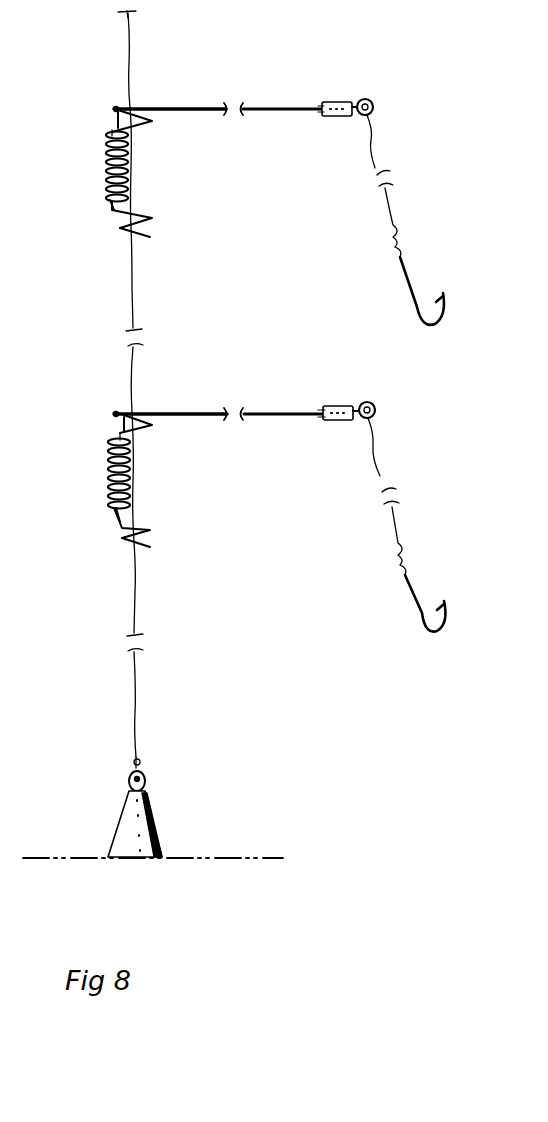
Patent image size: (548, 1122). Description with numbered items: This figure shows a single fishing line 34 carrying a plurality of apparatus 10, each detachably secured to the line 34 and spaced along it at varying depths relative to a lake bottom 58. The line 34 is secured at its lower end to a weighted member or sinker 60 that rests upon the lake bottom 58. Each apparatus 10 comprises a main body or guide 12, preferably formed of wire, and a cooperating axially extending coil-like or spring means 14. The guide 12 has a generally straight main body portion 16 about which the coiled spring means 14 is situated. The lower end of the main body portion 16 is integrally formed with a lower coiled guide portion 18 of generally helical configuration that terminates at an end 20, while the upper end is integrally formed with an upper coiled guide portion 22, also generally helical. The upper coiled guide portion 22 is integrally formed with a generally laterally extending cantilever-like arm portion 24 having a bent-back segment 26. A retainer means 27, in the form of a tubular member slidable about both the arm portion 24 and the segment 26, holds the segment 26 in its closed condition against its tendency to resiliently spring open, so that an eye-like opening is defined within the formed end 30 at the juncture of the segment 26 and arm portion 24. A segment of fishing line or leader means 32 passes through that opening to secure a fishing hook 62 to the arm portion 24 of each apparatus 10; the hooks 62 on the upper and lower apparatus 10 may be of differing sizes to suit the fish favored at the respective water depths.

The apparatus 10 is at (224, 199).
The main body or guide 12 is at (146, 100).
The coil-like or spring means 14 is at (131, 153).
The main body portion 16 is at (112, 210).
The lower coiled guide portion 18 is at (153, 218).
The end 20 is at (150, 237).
The upper coiled guide portion 22 is at (152, 121).
The cantilever-like arm portion 24 is at (208, 106).
The bent-back segment 26 is at (317, 116).
The retainer means 27 is at (333, 101).
The formed end 30 is at (373, 100).
The fishing line or leader means 32 is at (388, 208).
The line 34 is at (134, 37).
The lake bottom 58 is at (245, 857).
The weighted member (sinker) 60 is at (152, 818).
The fishing hook 62 is at (413, 310).